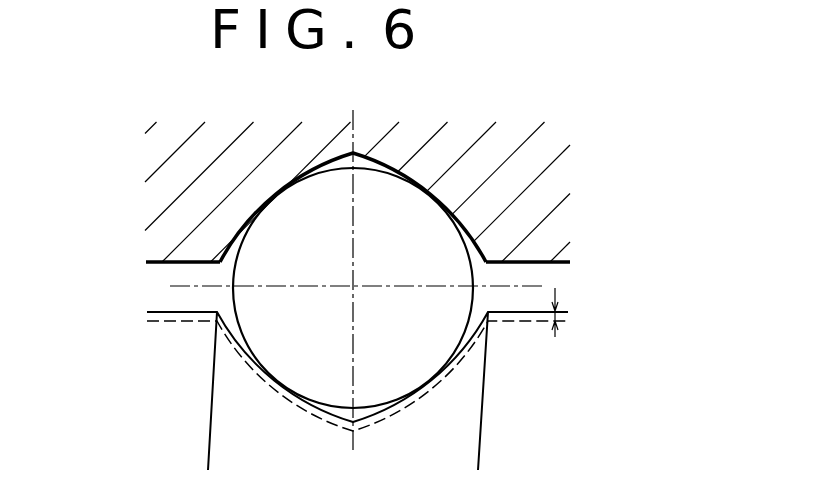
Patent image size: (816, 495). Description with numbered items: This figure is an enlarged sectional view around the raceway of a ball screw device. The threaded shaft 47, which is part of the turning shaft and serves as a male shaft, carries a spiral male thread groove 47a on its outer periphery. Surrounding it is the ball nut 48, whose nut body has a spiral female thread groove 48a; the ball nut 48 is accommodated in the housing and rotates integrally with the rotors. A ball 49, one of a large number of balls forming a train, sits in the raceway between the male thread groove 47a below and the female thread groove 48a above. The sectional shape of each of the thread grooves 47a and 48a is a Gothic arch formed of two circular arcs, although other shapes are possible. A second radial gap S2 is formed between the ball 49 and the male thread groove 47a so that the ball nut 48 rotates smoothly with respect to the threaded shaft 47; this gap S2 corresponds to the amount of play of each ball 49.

The threaded shaft 47 is at (180, 312).
The male thread groove 47a is at (268, 383).
The ball nut 48 is at (180, 263).
The female thread groove 48a is at (281, 194).
The ball 49 is at (237, 237).
The second radial gap S2 is at (562, 314).